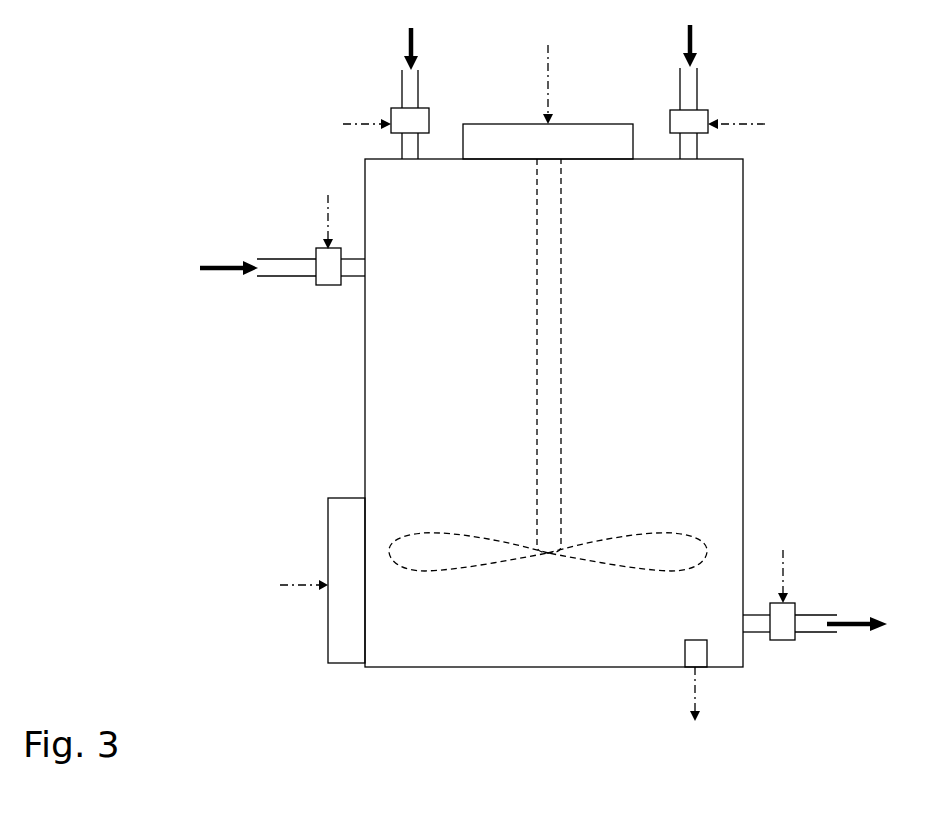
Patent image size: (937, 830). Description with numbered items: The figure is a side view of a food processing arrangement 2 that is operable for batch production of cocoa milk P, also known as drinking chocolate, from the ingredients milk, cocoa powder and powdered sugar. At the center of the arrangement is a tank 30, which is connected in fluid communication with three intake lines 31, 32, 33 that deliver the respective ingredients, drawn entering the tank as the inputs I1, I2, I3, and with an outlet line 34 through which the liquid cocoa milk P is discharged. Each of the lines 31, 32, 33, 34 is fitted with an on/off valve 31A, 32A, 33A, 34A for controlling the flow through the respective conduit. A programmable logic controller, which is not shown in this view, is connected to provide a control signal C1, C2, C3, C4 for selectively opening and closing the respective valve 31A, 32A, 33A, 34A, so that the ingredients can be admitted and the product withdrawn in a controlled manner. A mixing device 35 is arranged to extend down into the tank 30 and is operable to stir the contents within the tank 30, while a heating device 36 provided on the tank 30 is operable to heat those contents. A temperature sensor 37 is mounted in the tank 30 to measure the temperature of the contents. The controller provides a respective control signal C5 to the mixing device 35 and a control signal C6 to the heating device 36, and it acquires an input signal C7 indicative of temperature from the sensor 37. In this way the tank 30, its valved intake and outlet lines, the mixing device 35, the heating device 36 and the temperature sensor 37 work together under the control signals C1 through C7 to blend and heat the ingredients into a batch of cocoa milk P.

The food processing arrangement 2 is at (228, 172).
The tank 30 is at (743, 289).
The intake line 31 is at (283, 277).
The on/off valve 31A is at (329, 285).
The intake line 32 is at (400, 82).
The on/off valve 32A is at (429, 120).
The intake line 33 is at (697, 83).
The on/off valve 33A is at (670, 117).
The outlet line 34 is at (818, 632).
The on/off valve 34A is at (783, 640).
The mixing device 35 is at (576, 124).
The heating device 36 is at (328, 542).
The temperature sensor 37 is at (683, 657).
The first input I1 is at (218, 269).
The second input I2 is at (400, 46).
The third input I3 is at (677, 45).
The cocoa milk P is at (857, 611).
The control signal C1 is at (312, 222).
The control signal C2 is at (345, 125).
The control signal C3 is at (751, 125).
The control signal C4 is at (779, 561).
The control signal C5 is at (549, 72).
The control signal C6 is at (285, 587).
The input signal C7 is at (696, 710).